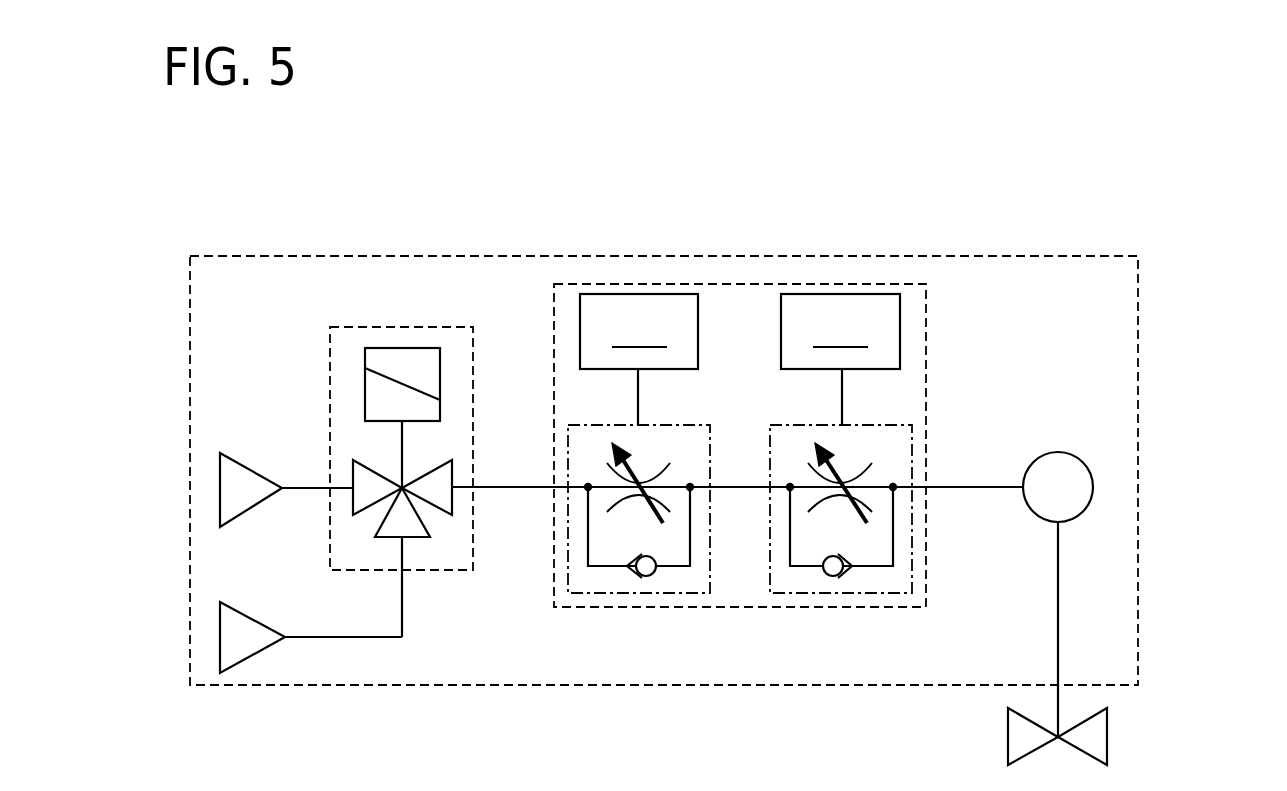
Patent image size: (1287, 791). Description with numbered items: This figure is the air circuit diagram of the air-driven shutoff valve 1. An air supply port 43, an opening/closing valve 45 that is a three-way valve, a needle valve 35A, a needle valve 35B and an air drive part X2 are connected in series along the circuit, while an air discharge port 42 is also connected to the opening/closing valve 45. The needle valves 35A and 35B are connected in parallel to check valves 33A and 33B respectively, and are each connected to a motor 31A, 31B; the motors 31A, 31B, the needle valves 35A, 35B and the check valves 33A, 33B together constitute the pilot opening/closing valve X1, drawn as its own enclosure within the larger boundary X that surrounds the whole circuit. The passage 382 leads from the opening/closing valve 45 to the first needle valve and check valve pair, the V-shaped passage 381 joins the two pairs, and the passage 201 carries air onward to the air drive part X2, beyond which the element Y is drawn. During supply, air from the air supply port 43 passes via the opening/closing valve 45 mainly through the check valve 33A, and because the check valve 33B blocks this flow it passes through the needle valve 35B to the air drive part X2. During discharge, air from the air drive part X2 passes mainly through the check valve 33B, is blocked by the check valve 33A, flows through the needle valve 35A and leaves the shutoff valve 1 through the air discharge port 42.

The air-driven shutoff valve 1 is at (1115, 220).
The gas supply unit X is at (983, 256).
The pilot opening/closing valve X1 is at (926, 333).
The air drive part X2 is at (1062, 452).
The valve Y is at (1107, 737).
The opening/closing valve 45 is at (385, 327).
The air supply port 43 is at (240, 458).
The air discharge port 42 is at (240, 607).
The motor 31A is at (639, 359).
The motor 31B is at (840, 359).
The needle valve 35A is at (633, 466).
The needle valve 35B is at (838, 468).
The check valve 33A is at (647, 578).
The check valve 33B is at (833, 578).
The passage 382 is at (510, 490).
The V-shaped passage 381 is at (740, 490).
The passage 201 is at (965, 490).